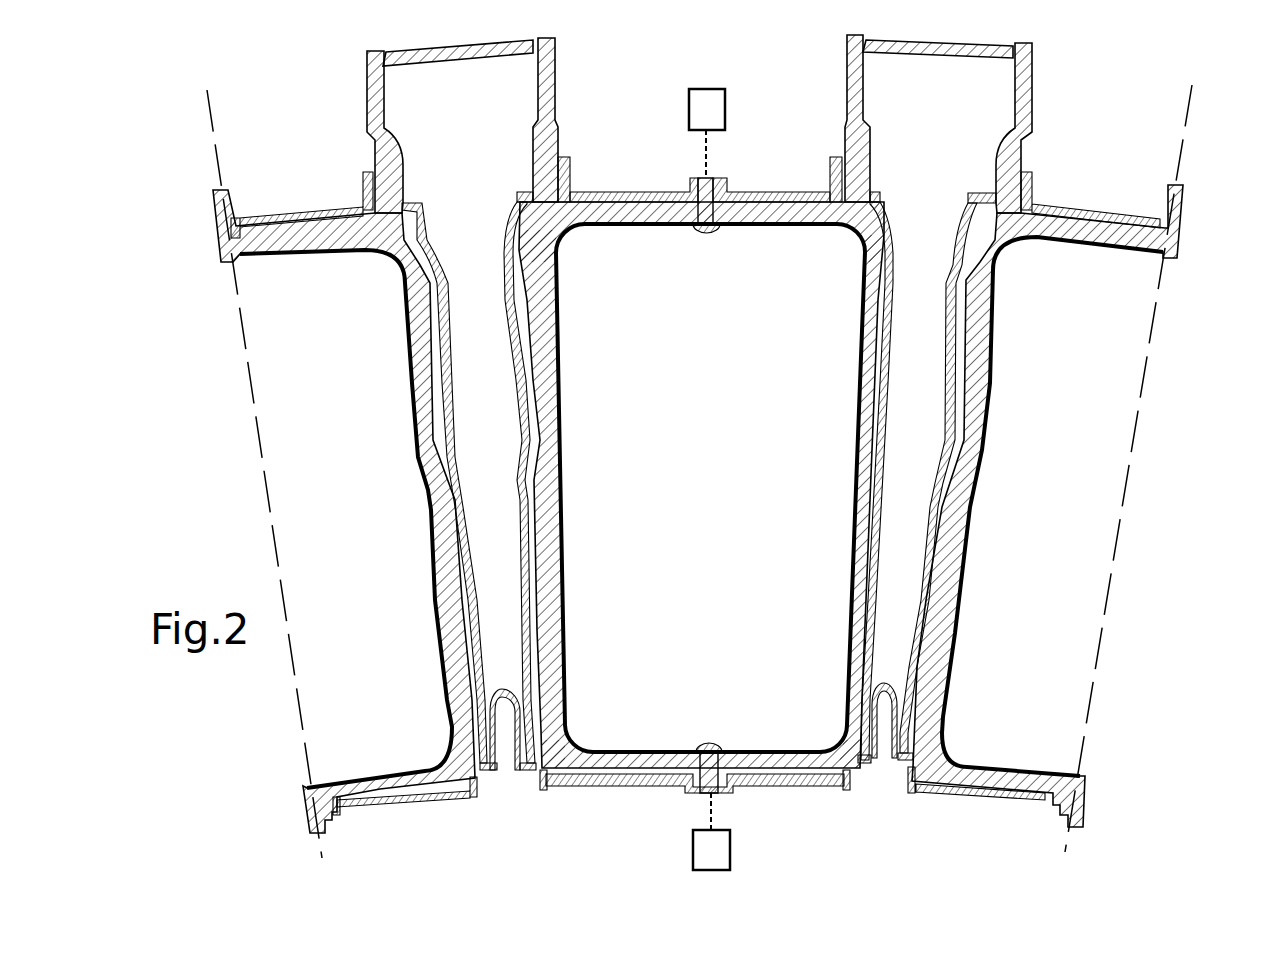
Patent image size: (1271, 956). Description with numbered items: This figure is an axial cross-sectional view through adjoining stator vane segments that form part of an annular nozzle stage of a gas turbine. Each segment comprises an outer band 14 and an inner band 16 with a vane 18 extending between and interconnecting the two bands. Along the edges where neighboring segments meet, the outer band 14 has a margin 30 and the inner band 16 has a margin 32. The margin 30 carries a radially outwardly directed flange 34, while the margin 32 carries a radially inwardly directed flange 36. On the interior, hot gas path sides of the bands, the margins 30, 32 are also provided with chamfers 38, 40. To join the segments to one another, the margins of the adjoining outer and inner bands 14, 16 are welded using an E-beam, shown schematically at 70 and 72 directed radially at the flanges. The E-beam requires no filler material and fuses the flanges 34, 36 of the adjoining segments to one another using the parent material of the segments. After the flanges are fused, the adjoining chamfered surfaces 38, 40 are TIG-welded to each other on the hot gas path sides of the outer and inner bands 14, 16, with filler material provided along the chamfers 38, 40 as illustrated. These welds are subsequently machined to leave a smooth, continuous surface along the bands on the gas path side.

The outer band 14 is at (583, 231).
The inner band 16 is at (638, 763).
The vane 18 is at (562, 428).
The margin 30 is at (742, 208).
The margin 32 is at (734, 783).
The flange 34 is at (713, 207).
The flange 36 is at (714, 795).
The chamfer 38 is at (700, 236).
The chamfer 40 is at (711, 745).
The E-beam 70 is at (697, 102).
The E-beam 72 is at (704, 153).